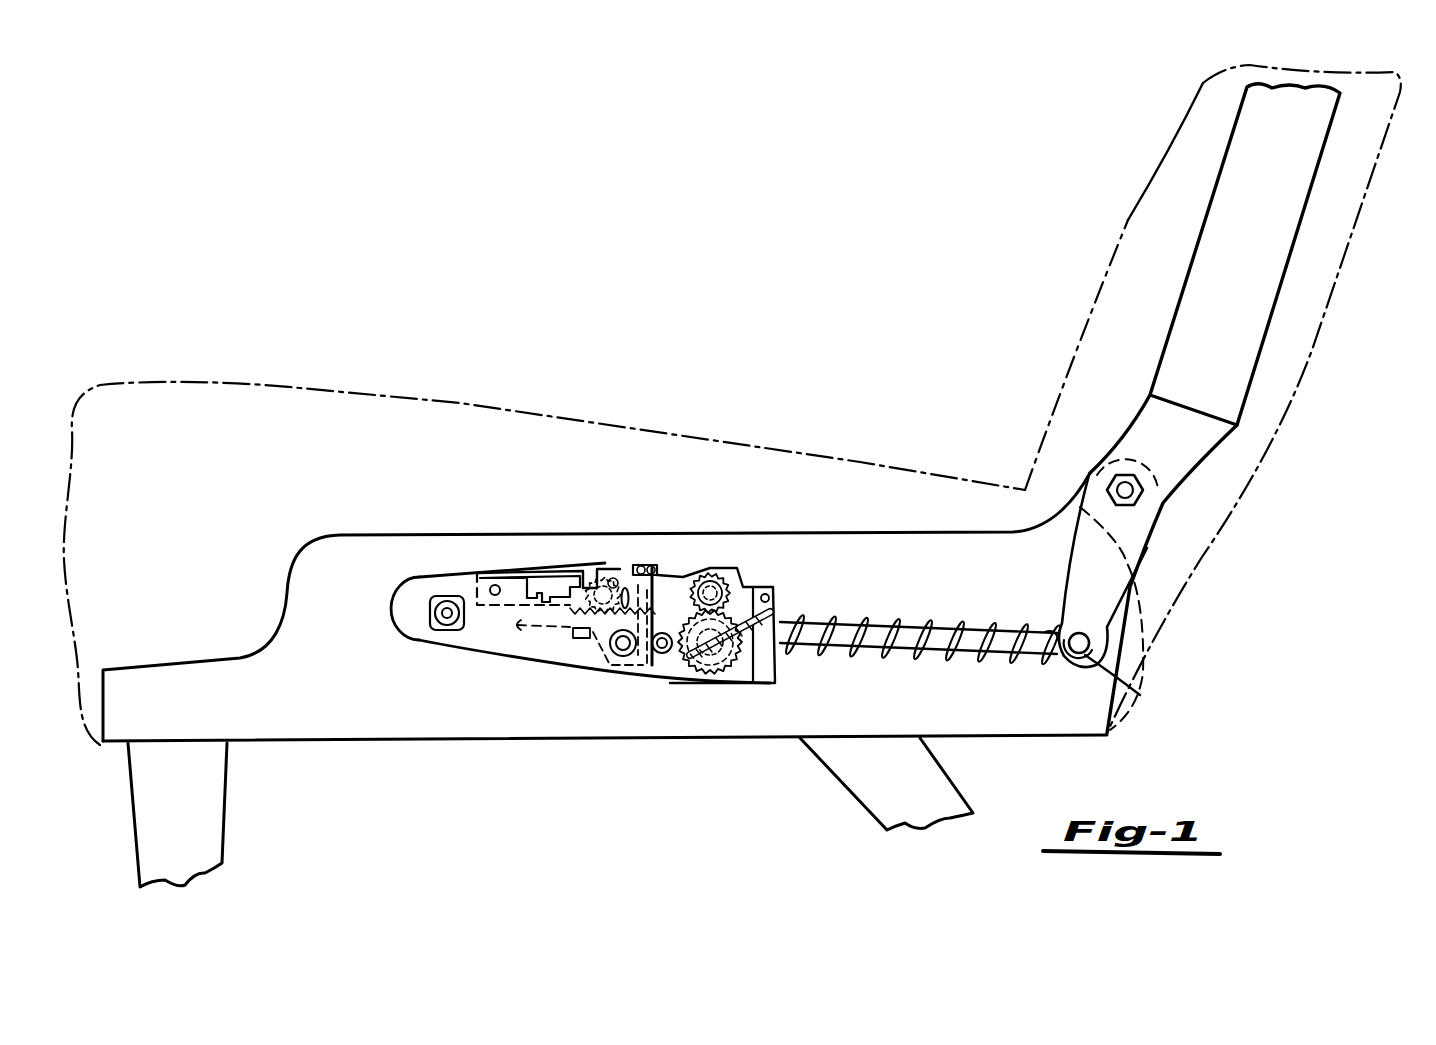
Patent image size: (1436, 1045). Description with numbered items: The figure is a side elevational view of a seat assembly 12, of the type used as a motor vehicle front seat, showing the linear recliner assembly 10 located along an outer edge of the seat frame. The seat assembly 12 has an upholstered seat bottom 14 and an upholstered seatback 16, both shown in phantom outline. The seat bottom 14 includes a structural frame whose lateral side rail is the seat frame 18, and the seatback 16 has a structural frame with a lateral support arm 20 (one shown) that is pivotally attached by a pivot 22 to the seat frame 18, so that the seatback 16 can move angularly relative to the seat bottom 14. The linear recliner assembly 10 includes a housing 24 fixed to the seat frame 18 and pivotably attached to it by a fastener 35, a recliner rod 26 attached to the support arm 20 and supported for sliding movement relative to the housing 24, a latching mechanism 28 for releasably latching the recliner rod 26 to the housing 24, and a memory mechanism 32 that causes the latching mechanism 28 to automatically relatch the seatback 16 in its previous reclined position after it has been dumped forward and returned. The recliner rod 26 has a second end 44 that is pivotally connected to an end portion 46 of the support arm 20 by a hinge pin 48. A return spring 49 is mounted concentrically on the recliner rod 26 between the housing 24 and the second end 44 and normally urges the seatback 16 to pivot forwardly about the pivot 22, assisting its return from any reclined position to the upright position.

The linear recliner assembly 10 is at (768, 560).
The seat assembly 12 is at (793, 348).
The seat bottom 14 is at (478, 417).
The seatback 16 is at (1163, 220).
The seat frame 18 is at (498, 712).
The lateral support arm 20 is at (1267, 263).
The pivot 22 is at (1125, 490).
The housing 24 is at (478, 633).
The recliner rod 26 is at (1004, 658).
The latching mechanism 28 is at (575, 552).
The memory mechanism 32 is at (728, 695).
The fastener 35 is at (447, 593).
The second end 44 is at (1113, 648).
The end portion 46 is at (1108, 598).
The hinge pin 48 is at (1140, 695).
The return spring 49 is at (987, 620).